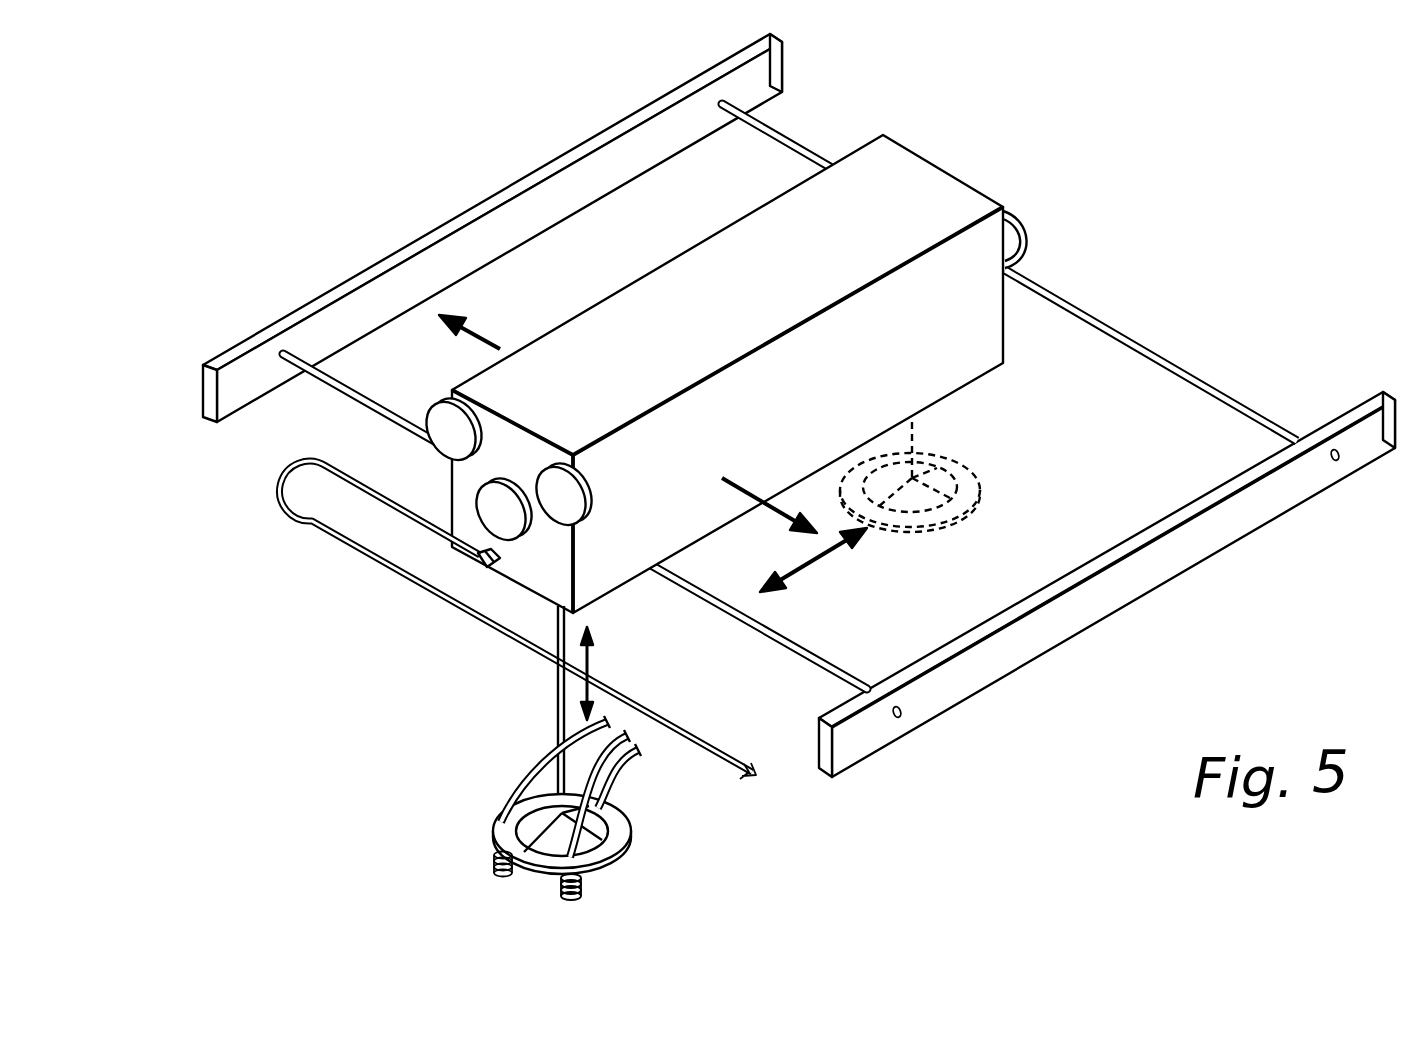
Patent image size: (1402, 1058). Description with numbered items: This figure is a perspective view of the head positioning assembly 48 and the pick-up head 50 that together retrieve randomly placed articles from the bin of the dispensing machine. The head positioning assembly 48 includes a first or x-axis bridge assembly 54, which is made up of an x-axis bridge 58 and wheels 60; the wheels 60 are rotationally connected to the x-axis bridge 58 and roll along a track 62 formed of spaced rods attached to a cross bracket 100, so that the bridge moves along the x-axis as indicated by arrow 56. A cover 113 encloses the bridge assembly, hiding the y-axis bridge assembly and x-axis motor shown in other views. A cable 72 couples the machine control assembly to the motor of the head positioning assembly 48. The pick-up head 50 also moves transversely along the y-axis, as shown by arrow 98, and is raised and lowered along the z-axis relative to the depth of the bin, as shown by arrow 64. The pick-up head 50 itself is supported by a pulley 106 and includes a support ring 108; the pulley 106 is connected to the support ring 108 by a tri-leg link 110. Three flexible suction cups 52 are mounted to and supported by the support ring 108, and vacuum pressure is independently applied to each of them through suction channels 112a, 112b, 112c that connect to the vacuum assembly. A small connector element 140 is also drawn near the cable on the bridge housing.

The head positioning assembly 48 is at (1045, 169).
The pick-up head 50 is at (980, 468).
The suction cups 52 is at (505, 872).
The first (x-axis) bridge assembly 54 is at (912, 146).
The arrow (x-axis direction) 56 is at (466, 319).
The x-axis bridge 58 is at (830, 272).
The wheels 60 is at (1018, 233).
The track 62 is at (338, 377).
The arrow (z-axis direction) 64 is at (592, 662).
The cable 72 is at (298, 493).
The arrow (y-axis direction) 98 is at (807, 555).
The cross bracket 100 is at (533, 178).
The pulley 106 is at (550, 630).
The support ring 108 is at (503, 837).
The tri-leg link 110 is at (500, 822).
The suction channel 112a is at (527, 783).
The suction channel 112b is at (577, 752).
The suction channel 112c is at (617, 770).
The cover 113 is at (963, 315).
The cable connector 140 is at (540, 560).